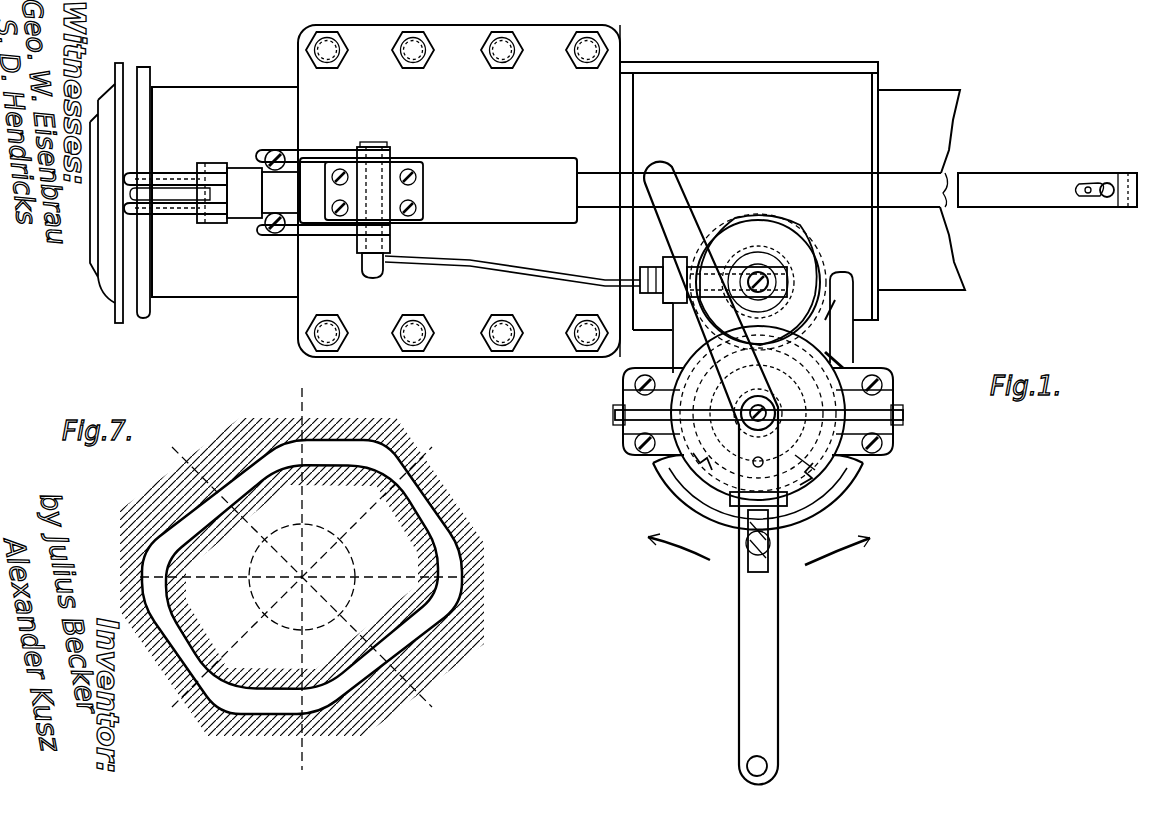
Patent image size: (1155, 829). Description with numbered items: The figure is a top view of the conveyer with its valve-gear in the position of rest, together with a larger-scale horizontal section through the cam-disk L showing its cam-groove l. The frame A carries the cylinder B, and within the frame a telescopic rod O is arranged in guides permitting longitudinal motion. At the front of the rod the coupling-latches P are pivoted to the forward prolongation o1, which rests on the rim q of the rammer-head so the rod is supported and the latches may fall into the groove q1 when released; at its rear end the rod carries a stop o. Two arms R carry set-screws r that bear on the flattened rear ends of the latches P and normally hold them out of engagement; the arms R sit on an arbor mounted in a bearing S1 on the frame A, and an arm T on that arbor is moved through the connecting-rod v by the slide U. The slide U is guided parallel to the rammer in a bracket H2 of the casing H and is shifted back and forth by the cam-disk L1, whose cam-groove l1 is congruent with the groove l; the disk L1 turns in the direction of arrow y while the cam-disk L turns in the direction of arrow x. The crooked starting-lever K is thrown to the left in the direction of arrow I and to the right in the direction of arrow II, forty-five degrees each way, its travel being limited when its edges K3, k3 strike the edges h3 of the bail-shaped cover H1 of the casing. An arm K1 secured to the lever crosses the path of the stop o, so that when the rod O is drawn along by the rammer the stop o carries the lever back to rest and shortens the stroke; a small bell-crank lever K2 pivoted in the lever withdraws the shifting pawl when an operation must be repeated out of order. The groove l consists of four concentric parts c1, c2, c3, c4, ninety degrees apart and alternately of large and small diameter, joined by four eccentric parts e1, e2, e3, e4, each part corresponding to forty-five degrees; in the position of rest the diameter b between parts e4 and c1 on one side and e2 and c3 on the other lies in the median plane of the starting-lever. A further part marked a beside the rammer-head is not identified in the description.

In FIG. 1, the frame A is at (459, 191).
In FIG. 1, the cylinder B is at (186, 92).
In FIG. 1, the telescopic rod O is at (585, 190).
In FIG. 1, the stop o is at (1086, 198).
In FIG. 1, the forward prolongation of the rod o1 is at (200, 215).
In FIG. 1, the coupling-latches P is at (125, 206).
In FIG. 1, the set-screws r is at (160, 172).
In FIG. 1, the bracket a is at (92, 280).
In FIG. 1, the rim of the rammer-head q is at (150, 318).
In FIG. 1, the groove of the rammer-head q1 is at (123, 312).
In FIG. 1, the arms R is at (315, 150).
In FIG. 1, the bearing S1 is at (390, 170).
In FIG. 1, the arm T is at (386, 252).
In FIG. 1, the arrow y is at (446, 270).
In FIG. 1, the starting-lever K is at (787, 625).
In FIG. 1, the arm of the starting-lever K1 is at (680, 230).
In FIG. 1, the bell-crank lever K2 is at (748, 558).
In FIG. 1, the edge of the starting-lever K3 is at (735, 505).
In FIG. 1, the edge of the starting-lever k3 is at (805, 500).
In FIG. 1, the slide U is at (665, 300).
In FIG. 1, the casing H is at (846, 482).
In FIG. 1, the bail-shaped cover H1 is at (650, 450).
In FIG. 1, the bracket H2 is at (678, 300).
In FIG. 1, the edges of the cover h3 is at (672, 475).
In FIG. 1, the cam-disk L is at (690, 498).
In FIG. 1, the cam-disk L1 is at (825, 278).
In FIG. 1, the cam-groove l is at (790, 465).
In FIG. 1, the cam-groove l1 is at (808, 250).
In FIG. 1, the connecting-rod v is at (778, 275).
In FIG. 1, the arrow x is at (845, 362).
In FIG. 1, the arrow I is at (679, 561).
In FIG. 1, the arrow II is at (837, 562).
In FIG. 7, the diameter b is at (302, 579).
In FIG. 7, the concentric part of the cam-groove c1 is at (355, 689).
In FIG. 7, the concentric part of the cam-groove c2 is at (437, 514).
In FIG. 7, the concentric part of the cam-groove c3 is at (302, 569).
In FIG. 7, the concentric part of the cam-groove c4 is at (157, 631).
In FIG. 7, the eccentric part of the cam-groove e1 is at (425, 628).
In FIG. 7, the eccentric part of the cam-groove e2 is at (302, 577).
In FIG. 7, the eccentric part of the cam-groove e3 is at (179, 519).
In FIG. 7, the eccentric part of the cam-groove e4 is at (247, 698).